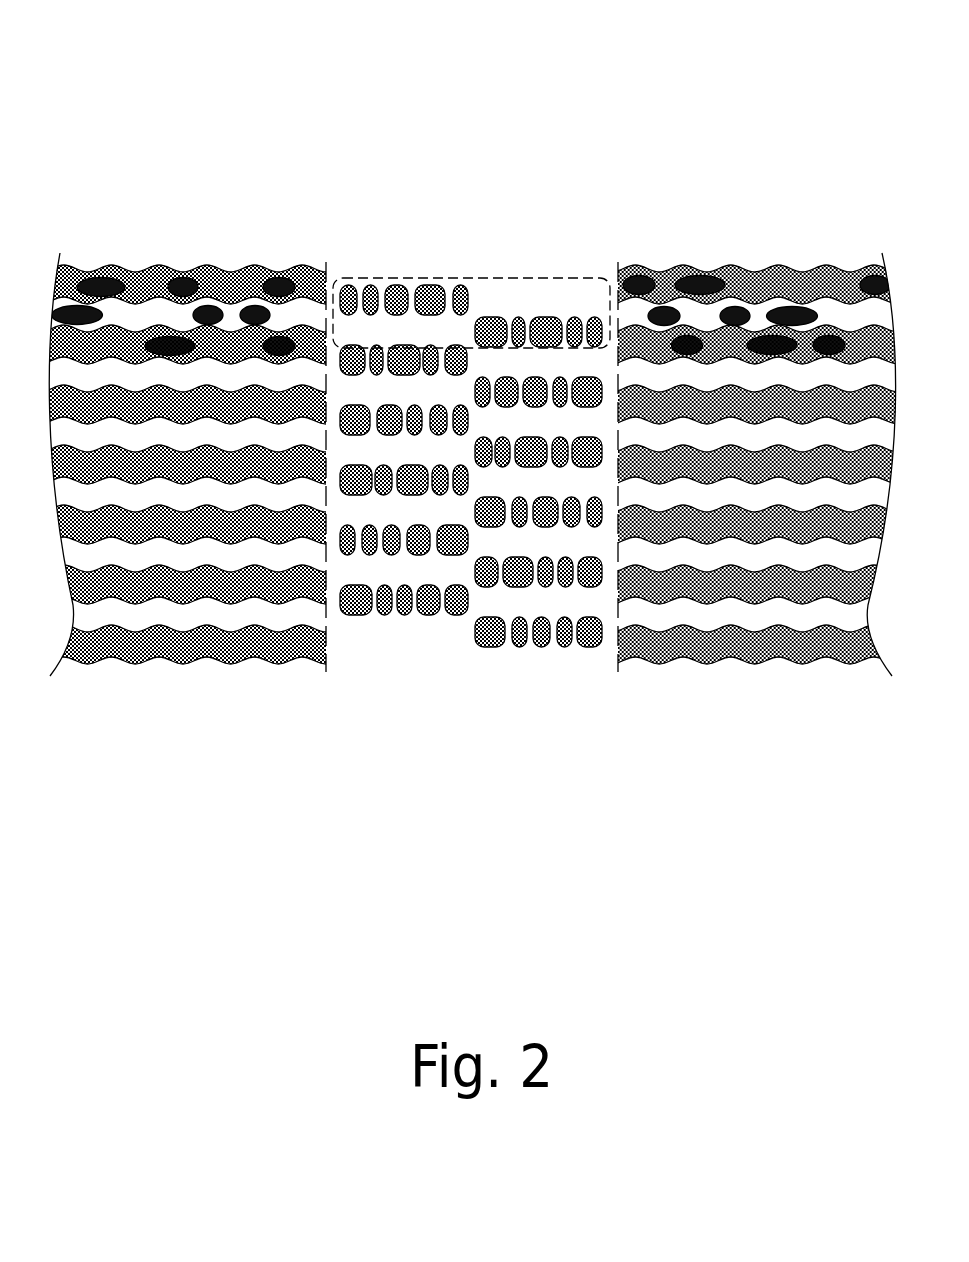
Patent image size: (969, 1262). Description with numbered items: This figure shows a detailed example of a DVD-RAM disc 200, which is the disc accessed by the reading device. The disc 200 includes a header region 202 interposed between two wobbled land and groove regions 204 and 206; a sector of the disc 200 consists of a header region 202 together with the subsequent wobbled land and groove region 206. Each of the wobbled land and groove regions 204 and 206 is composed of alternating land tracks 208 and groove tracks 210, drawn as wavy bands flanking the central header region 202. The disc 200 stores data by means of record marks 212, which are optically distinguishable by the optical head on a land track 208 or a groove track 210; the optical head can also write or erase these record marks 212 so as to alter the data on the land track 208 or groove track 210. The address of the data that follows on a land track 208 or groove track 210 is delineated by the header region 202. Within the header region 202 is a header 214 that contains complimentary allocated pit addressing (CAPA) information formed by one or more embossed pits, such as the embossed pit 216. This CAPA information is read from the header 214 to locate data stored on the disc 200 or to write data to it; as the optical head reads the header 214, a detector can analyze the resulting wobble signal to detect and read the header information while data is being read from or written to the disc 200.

The DVD-RAM disc 200 is at (772, 58).
The header region 202 is at (471, 391).
The wobbled land and groove region 204 is at (183, 516).
The wobbled land and groove region 206 is at (755, 519).
The land track 208 is at (828, 296).
The groove track 210 is at (205, 264).
The record mark 212 is at (642, 272).
The header 214 is at (567, 277).
The embossed pit 216 is at (404, 274).